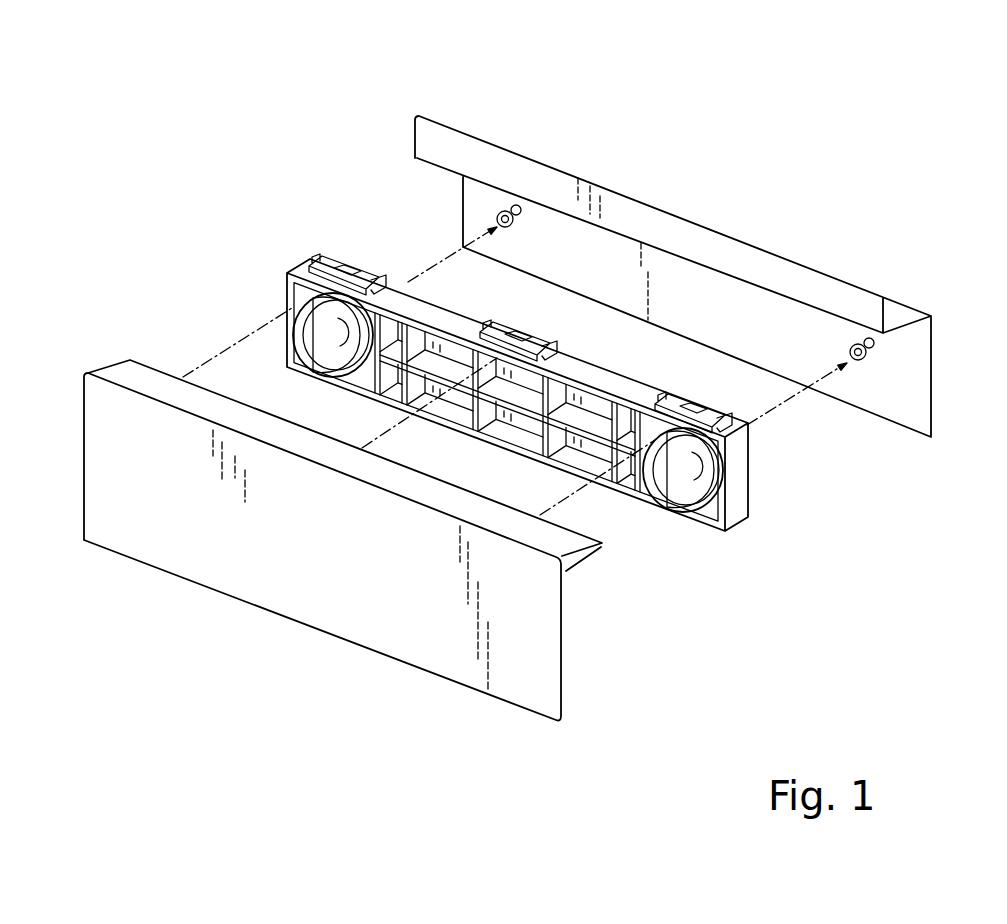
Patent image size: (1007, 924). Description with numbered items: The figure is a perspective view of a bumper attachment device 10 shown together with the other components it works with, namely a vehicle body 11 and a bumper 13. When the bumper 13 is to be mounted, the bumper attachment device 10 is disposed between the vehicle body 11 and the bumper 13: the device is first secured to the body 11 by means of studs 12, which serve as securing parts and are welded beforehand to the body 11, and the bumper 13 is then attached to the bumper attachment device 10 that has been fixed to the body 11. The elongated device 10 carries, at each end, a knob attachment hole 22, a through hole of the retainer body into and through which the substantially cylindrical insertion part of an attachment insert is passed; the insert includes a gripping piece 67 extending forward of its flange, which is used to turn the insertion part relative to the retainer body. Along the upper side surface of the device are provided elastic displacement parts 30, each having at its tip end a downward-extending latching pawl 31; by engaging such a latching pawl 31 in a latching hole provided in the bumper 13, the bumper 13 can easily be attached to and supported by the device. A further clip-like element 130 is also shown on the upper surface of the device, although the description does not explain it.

The bumper attachment device 10 is at (767, 558).
The vehicle body 11 is at (665, 262).
The stud 12 is at (500, 208).
The bumper 13 is at (360, 598).
The knob attachment hole 22 is at (710, 500).
The elastic displacement part 30 is at (677, 393).
The latching pawl 31 is at (693, 417).
The gripping piece 67 is at (680, 493).
The clip 130 is at (505, 322).